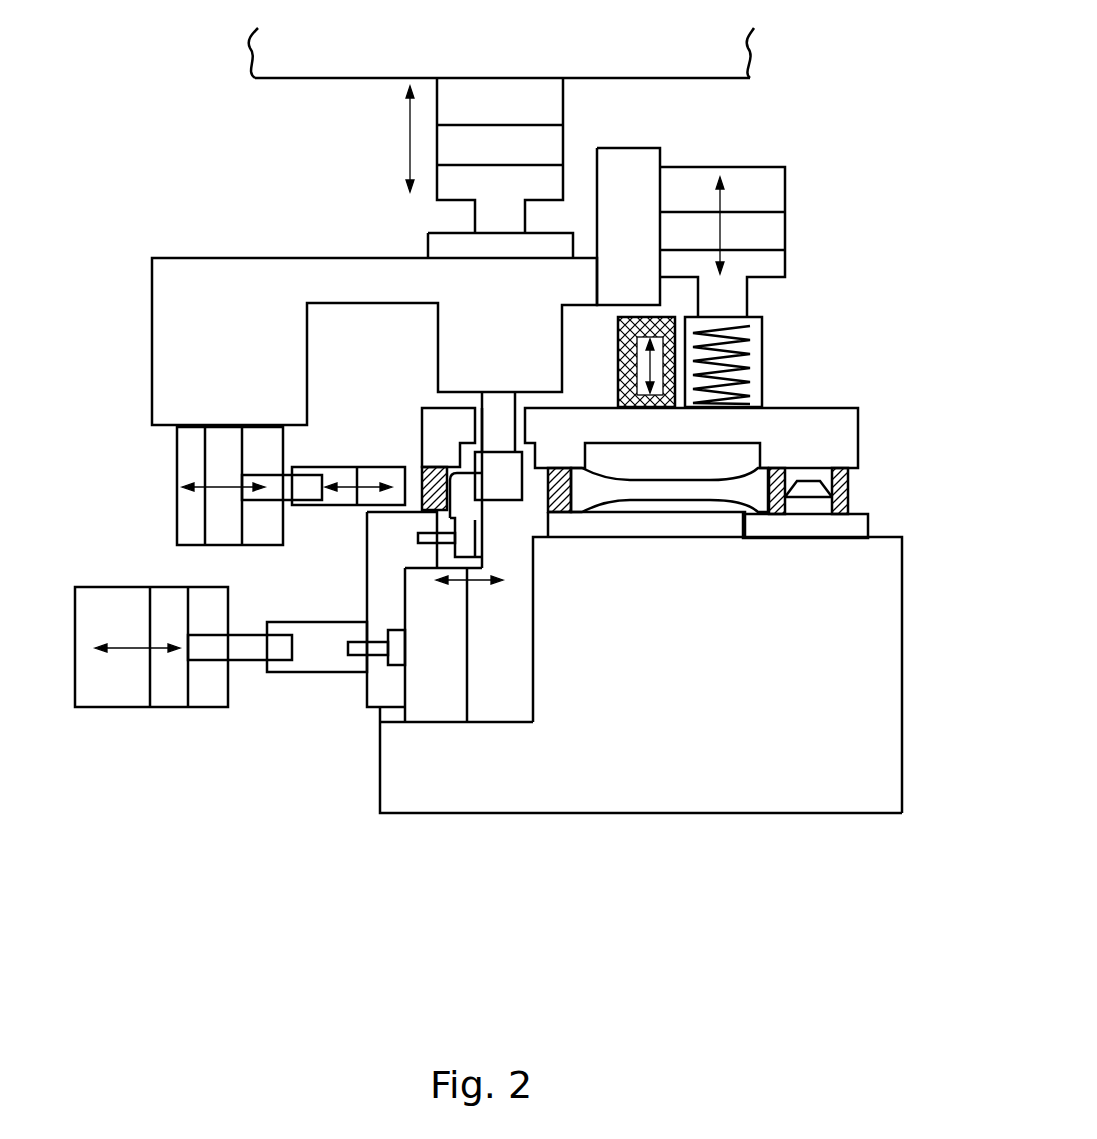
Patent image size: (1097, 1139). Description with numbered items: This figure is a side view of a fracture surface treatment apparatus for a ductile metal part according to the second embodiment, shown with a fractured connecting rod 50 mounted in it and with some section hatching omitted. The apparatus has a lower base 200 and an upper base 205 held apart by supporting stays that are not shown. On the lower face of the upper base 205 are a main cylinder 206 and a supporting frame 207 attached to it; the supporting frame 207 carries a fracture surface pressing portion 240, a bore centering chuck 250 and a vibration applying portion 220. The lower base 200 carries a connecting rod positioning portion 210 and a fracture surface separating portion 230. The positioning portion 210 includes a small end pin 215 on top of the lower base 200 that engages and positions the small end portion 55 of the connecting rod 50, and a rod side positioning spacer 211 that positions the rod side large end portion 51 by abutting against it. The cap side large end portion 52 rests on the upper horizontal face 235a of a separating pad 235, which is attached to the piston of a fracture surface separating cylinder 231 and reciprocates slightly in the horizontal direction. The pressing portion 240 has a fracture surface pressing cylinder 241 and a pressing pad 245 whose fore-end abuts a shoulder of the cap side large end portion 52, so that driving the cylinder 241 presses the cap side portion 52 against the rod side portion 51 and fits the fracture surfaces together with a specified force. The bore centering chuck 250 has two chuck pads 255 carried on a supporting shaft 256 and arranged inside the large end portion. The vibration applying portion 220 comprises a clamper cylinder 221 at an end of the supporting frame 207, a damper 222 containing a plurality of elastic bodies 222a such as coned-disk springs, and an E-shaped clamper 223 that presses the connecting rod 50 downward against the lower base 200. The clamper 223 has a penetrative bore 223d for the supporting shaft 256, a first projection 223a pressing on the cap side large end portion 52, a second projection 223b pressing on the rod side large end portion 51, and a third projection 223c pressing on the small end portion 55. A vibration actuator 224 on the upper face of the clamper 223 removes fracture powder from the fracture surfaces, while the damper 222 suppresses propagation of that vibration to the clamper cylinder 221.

The connecting rod 50 is at (705, 474).
The rod side large end portion 51 is at (563, 488).
The cap side large end portion 52 is at (430, 510).
The small end portion 55 is at (845, 488).
The lower base 200 is at (420, 813).
The upper base 205 is at (716, 42).
The main cylinder 206 is at (565, 110).
The supporting frame 207 is at (238, 258).
The connecting rod positioning portion 210 is at (745, 578).
The rod side positioning spacer 211 is at (567, 525).
The small end pin 215 is at (813, 505).
The vibration applying portion 220 is at (764, 277).
The clamper cylinder 221 is at (787, 186).
The damper 222 is at (767, 362).
The elastic bodies 222a is at (745, 357).
The clamper 223 is at (680, 380).
The first projection 223a is at (444, 412).
The second projection 223b is at (585, 453).
The third projection 223c is at (848, 443).
The penetrative bore 223d is at (528, 428).
The vibration actuator 224 is at (617, 331).
The fracture surface separating portion 230 is at (236, 701).
The fracture surface separating cylinder 231 is at (158, 727).
The separating pad 235 is at (458, 565).
The upper horizontal face 235a is at (397, 498).
The fracture surface pressing portion 240 is at (234, 462).
The fracture surface pressing cylinder 241 is at (177, 525).
The pressing pad 245 is at (362, 468).
The bore centering chuck 250 is at (374, 348).
The chuck pads 255 is at (538, 516).
The supporting shaft 256 is at (498, 412).